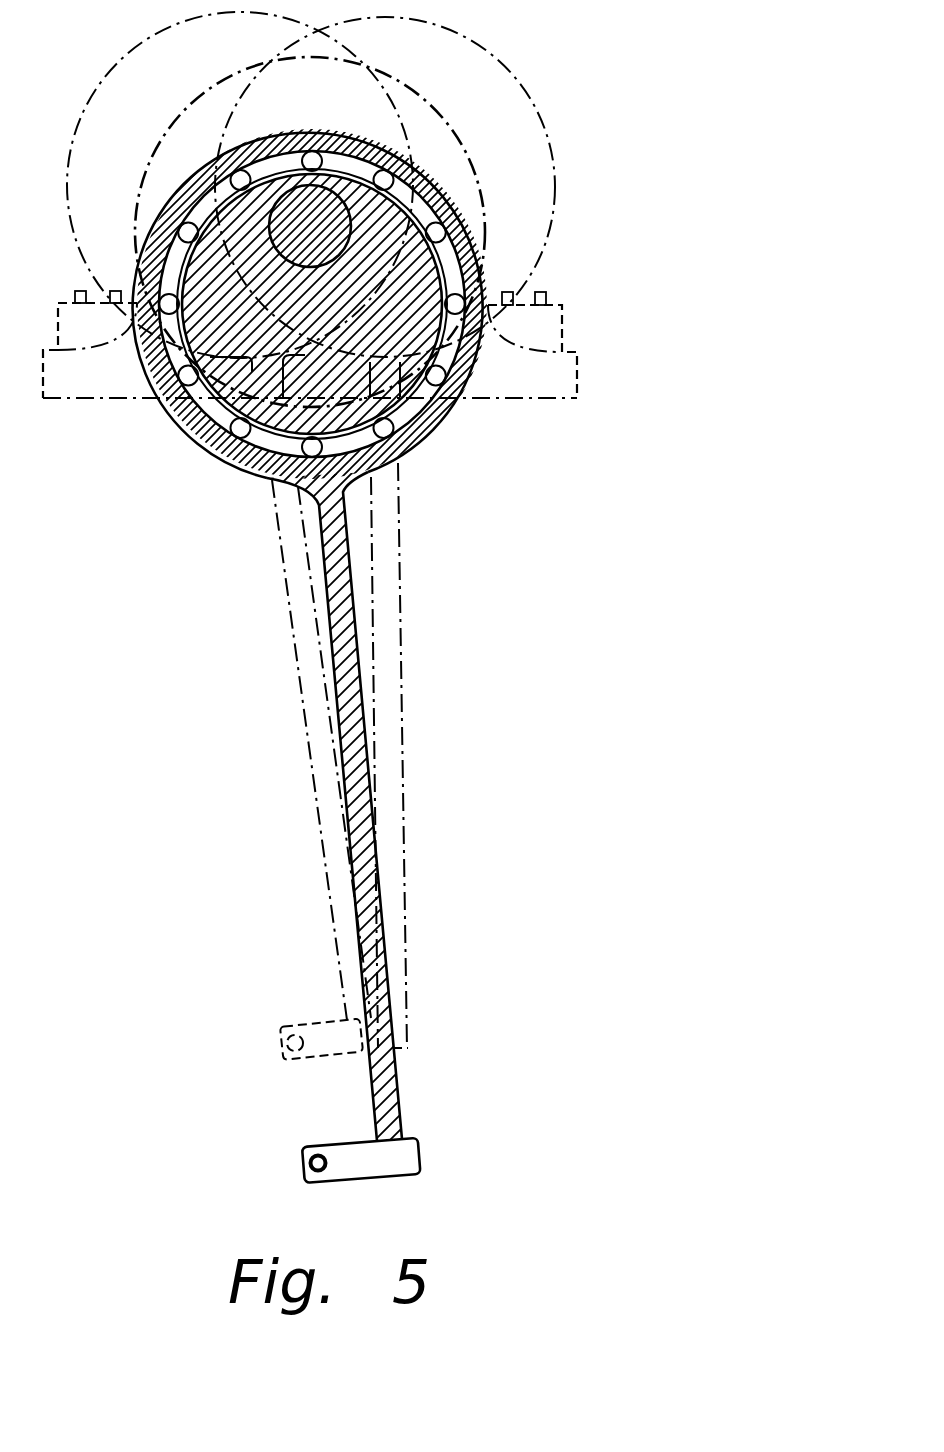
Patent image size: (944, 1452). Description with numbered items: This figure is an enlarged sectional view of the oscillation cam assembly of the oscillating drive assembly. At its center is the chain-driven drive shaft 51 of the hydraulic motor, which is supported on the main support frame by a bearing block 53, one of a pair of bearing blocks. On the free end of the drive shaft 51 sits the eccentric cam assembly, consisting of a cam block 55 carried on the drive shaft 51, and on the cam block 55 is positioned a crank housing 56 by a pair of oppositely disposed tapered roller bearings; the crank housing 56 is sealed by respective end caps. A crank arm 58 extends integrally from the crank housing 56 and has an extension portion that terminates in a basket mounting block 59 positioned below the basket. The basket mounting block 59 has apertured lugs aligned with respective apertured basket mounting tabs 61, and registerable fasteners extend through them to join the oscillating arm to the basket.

The drive shaft 51 is at (325, 200).
The bearing block 53 is at (582, 370).
The cam block 55 is at (412, 196).
The crank housing 56 is at (470, 247).
The crank arm 58 is at (352, 729).
The basket mounting block 59 is at (443, 1149).
The basket mounting tab 61 is at (345, 1153).